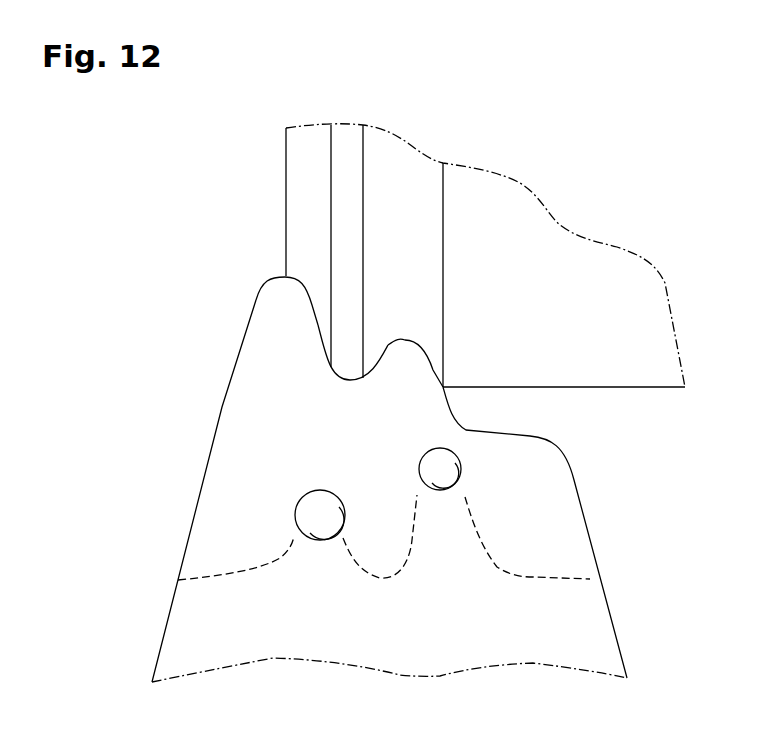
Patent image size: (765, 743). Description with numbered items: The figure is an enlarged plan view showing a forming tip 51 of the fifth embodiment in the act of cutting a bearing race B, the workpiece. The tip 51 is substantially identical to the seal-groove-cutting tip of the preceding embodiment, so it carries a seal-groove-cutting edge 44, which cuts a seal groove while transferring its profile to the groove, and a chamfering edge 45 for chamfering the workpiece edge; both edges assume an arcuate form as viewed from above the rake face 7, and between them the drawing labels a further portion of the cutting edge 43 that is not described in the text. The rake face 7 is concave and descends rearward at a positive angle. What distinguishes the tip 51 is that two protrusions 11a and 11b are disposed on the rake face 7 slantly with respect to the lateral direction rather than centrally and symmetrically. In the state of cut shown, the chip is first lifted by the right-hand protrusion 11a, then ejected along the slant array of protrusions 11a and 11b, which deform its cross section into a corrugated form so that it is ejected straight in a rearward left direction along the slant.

The tip 51 is at (188, 348).
The chamfering edge 45 is at (279, 275).
The recess 43 is at (316, 307).
The seal-groove-cutting edge 44 is at (406, 340).
The bearing race B is at (284, 198).
The protrusion 11a is at (462, 462).
The protrusion 11b is at (310, 497).
The rake face 7 is at (568, 627).